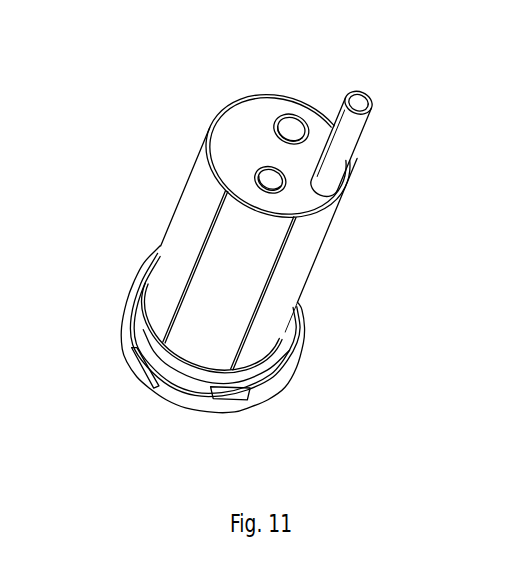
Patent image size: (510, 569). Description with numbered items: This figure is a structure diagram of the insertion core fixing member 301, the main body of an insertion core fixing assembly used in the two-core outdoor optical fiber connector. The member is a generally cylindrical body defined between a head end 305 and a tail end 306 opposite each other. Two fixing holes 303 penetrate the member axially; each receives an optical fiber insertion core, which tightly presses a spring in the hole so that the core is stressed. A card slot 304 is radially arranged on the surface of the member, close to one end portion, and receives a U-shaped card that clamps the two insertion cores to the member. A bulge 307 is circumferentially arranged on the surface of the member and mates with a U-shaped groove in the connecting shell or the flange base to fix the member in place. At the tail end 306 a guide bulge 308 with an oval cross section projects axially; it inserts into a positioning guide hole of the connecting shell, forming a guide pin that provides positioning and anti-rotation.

The insertion core fixing member 301 is at (156, 186).
The fixing hole 303 is at (282, 120).
The card slot 304 is at (167, 383).
The head end 305 is at (273, 388).
The tail end 306 is at (333, 117).
The bulge 307 is at (121, 290).
The guide bulge 308 is at (343, 150).